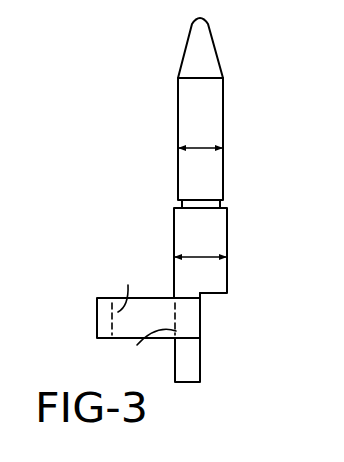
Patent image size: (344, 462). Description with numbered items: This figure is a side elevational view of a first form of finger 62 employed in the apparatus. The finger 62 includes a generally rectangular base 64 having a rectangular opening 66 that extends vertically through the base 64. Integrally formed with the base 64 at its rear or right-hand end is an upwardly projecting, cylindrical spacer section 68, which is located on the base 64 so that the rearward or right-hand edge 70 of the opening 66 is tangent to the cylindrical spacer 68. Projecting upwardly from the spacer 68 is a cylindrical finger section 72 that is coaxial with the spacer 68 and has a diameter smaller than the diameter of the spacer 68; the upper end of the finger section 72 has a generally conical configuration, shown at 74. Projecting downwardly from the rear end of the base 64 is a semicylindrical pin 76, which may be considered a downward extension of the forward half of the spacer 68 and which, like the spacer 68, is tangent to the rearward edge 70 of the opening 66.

The finger 62 is at (290, 82).
The base 64 is at (97, 312).
The rectangular opening 66 is at (128, 285).
The cylindrical spacer section 68 is at (228, 280).
The rearward edge 70 is at (137, 345).
The cylindrical finger section 72 is at (225, 181).
The tapered tip 74 is at (212, 48).
The semicylindrical pin 76 is at (201, 365).